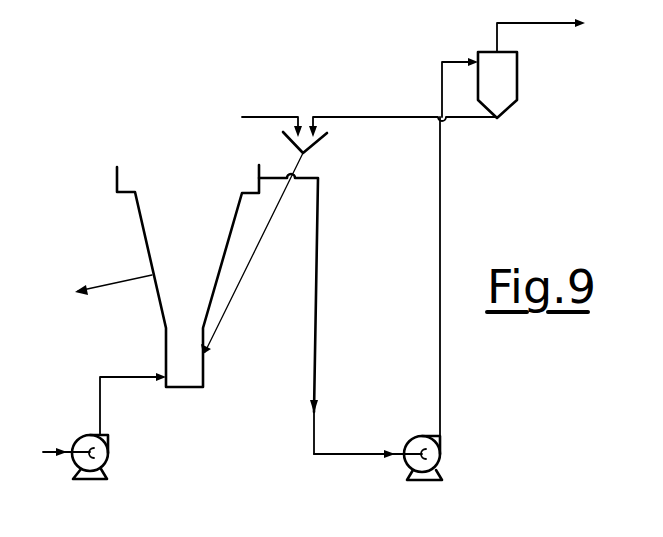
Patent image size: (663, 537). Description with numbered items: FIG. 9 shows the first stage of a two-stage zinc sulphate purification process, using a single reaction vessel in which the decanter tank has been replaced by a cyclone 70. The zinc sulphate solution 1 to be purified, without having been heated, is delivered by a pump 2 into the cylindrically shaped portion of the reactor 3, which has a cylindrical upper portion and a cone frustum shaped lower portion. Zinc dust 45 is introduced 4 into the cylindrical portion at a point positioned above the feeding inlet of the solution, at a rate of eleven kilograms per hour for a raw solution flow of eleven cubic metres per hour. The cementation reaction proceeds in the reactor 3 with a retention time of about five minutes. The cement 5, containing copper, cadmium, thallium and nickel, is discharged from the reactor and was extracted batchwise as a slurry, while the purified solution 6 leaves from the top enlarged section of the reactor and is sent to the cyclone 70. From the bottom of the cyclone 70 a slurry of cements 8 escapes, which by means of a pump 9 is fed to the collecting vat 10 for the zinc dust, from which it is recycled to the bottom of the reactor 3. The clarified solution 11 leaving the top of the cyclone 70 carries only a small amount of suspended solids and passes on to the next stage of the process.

The zinc sulphate solution 1 is at (52, 452).
The pump 2 is at (102, 460).
The reactor 3 is at (180, 387).
The zinc dust introduction 4 is at (218, 327).
The cement 5 is at (113, 281).
The purified solution 6 is at (272, 178).
The slurry of cements 8 is at (370, 117).
The pump 9 is at (417, 463).
The collecting vat 10 is at (318, 142).
The clarified solution 11 is at (540, 25).
The zinc dust 45 is at (262, 117).
The cyclone 70 is at (508, 92).